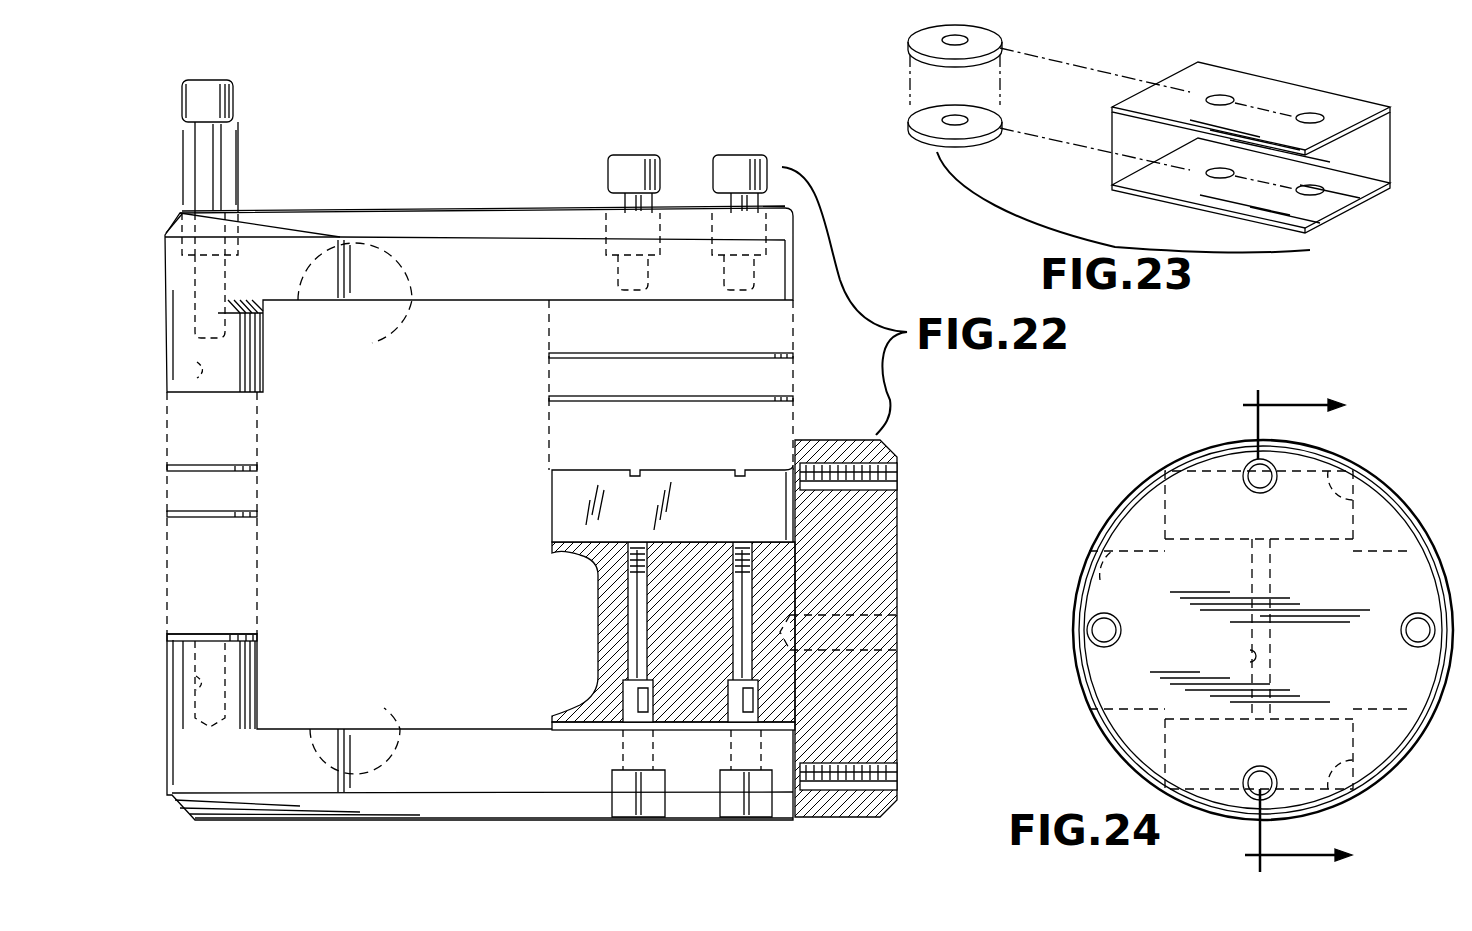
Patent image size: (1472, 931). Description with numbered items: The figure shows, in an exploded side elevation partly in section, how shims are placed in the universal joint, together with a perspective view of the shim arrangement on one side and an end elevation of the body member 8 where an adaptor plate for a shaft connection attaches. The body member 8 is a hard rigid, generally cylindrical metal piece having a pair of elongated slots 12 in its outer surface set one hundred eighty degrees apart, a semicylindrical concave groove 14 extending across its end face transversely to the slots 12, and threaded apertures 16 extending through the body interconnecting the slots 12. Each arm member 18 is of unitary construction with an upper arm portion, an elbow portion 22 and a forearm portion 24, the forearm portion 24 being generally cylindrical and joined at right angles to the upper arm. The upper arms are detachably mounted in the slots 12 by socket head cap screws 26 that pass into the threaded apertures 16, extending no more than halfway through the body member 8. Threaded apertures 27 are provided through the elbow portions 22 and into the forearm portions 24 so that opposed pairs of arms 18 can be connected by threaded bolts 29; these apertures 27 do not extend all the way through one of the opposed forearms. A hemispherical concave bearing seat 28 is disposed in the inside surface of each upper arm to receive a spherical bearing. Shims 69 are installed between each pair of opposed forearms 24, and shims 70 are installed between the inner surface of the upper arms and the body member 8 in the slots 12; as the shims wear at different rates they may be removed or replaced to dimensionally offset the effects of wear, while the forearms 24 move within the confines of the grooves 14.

In FIG. 24, the body member 8 is at (1136, 518).
In FIG. 22, the elongated slot 12 is at (560, 500).
In FIG. 24, the elongated slot 12 is at (1330, 466).
In FIG. 24, the semicylindrical slot or groove 14 is at (1086, 572).
In FIG. 22, the threaded aperture 16 is at (635, 626).
In FIG. 24, the threaded aperture 16 is at (1250, 660).
In FIG. 22, the arm member 18 is at (442, 196).
In FIG. 22, the elbow portion 22 is at (178, 221).
In FIG. 24, the elbow portion 22 is at (1277, 632).
In FIG. 22, the forearm portion 24 is at (264, 372).
In FIG. 22, the socket head cap screw 26 is at (622, 173).
In FIG. 22, the threaded aperture 27 is at (190, 365).
In FIG. 22, the hemispherical concave bearing seat 28 is at (355, 508).
In FIG. 22, the threaded bolt 29 is at (235, 102).
In FIG. 22, the shim 69 is at (260, 468).
In FIG. 23, the shim 69 is at (987, 34).
In FIG. 22, the shim 70 is at (575, 357).
In FIG. 23, the shim 70 is at (1283, 93).